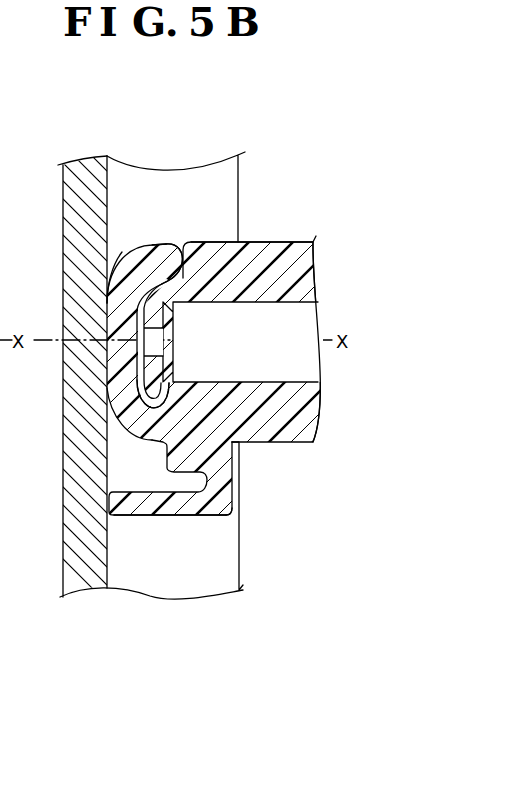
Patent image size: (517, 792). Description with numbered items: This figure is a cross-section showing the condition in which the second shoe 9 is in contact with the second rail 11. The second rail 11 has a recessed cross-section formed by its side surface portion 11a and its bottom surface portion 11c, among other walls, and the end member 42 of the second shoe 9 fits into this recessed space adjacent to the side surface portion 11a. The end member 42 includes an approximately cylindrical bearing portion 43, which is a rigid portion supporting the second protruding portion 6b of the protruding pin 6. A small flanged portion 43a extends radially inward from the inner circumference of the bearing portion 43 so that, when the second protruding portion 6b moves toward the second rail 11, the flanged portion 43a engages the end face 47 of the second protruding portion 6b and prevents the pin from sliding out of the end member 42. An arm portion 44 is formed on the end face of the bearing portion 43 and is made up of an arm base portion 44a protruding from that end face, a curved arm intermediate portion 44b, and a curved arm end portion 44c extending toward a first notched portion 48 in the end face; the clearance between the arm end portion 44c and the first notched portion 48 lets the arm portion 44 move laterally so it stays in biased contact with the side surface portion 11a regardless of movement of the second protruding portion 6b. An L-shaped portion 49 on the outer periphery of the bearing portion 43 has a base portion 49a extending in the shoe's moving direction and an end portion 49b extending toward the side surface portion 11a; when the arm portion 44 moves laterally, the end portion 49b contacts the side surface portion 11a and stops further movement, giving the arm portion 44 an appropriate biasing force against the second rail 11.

The second shoe 9 is at (320, 193).
The second rail 11 is at (64, 564).
The side surface portion 11a is at (66, 478).
The bottom surface portion 11c is at (239, 180).
The end member 42 is at (256, 446).
The bearing portion 43 is at (214, 240).
The flanged portion 43a is at (174, 316).
The arm portion 44 is at (127, 258).
The arm base portion 44a is at (135, 441).
The arm intermediate portion 44b is at (110, 312).
The arm end portion 44c is at (152, 243).
The end face 47 is at (110, 386).
The first notched portion 48 is at (172, 249).
The L-shaped portion 49 is at (166, 520).
The base portion 49a is at (232, 496).
The end portion 49b is at (137, 517).
The second protruding portion 6b is at (287, 393).
The protruding pin 6 is at (8, 474).